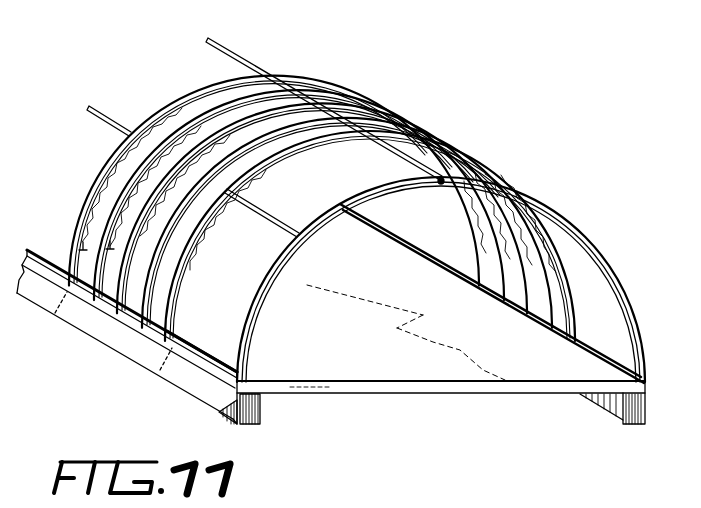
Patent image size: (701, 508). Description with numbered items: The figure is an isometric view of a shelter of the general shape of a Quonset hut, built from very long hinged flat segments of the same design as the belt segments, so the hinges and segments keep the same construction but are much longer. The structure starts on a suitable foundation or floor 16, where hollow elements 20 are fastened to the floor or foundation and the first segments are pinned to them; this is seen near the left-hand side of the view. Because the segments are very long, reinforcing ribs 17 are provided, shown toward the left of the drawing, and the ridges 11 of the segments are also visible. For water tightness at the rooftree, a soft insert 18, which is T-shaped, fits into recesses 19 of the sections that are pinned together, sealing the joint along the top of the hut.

The ridges 11 is at (165, 229).
The foundation or floor 16 is at (379, 392).
The reinforcing ribs 17 is at (109, 128).
The soft insert 18 is at (382, 160).
The recesses 19 is at (441, 184).
The hollow elements 20 is at (196, 346).